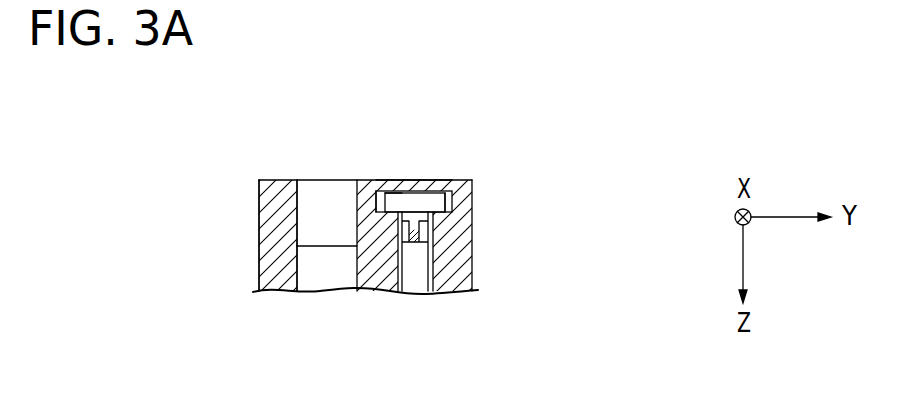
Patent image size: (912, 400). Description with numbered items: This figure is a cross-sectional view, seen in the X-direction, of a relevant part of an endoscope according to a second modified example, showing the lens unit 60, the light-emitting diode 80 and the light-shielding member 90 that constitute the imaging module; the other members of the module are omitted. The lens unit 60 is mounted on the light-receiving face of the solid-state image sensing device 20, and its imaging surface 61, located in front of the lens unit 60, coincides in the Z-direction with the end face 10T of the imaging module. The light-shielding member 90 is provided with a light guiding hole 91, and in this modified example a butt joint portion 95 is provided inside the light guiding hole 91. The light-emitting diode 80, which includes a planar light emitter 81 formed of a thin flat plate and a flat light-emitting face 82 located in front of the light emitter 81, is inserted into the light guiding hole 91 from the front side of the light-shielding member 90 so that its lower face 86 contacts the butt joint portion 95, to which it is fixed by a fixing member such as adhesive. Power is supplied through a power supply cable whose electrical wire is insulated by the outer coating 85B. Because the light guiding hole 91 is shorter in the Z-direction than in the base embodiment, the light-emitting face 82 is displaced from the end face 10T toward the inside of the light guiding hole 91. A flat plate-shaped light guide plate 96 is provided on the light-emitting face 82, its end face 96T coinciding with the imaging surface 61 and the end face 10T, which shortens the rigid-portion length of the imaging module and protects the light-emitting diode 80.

The end face of the imaging module 10T is at (279, 180).
The solid-state image sensing device 20 is at (330, 258).
The lens unit 60 is at (327, 202).
The imaging surface 61 is at (306, 180).
The light-emitting diode 80 is at (516, 191).
The light emitter 81 is at (428, 204).
The light-emitting face 82 is at (402, 190).
The outer coating 85B is at (414, 263).
The lower face of the light-emitting diode 86 is at (398, 213).
The light-shielding member 90 is at (272, 214).
The light guiding hole 91 is at (392, 190).
The butt joint portion 95 is at (445, 207).
The light guide plate 96 is at (442, 190).
The end face of the light guide plate 96T is at (425, 180).